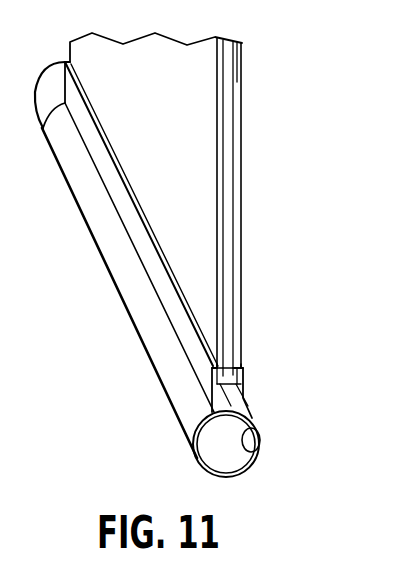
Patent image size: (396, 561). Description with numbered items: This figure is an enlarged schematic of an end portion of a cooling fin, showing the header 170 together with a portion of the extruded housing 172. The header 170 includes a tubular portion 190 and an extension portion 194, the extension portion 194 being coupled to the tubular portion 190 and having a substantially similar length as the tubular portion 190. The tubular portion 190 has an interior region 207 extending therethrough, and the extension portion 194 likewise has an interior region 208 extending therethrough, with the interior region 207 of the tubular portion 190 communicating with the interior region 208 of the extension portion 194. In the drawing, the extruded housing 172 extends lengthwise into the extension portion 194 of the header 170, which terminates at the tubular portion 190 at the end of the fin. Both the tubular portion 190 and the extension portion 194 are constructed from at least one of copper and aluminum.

The header 170 is at (138, 354).
The extruded housing 172 is at (241, 273).
The tubular portion 190 is at (179, 422).
The extension portion 194 is at (223, 386).
The interior region 207 is at (253, 426).
The interior region 208 is at (238, 383).